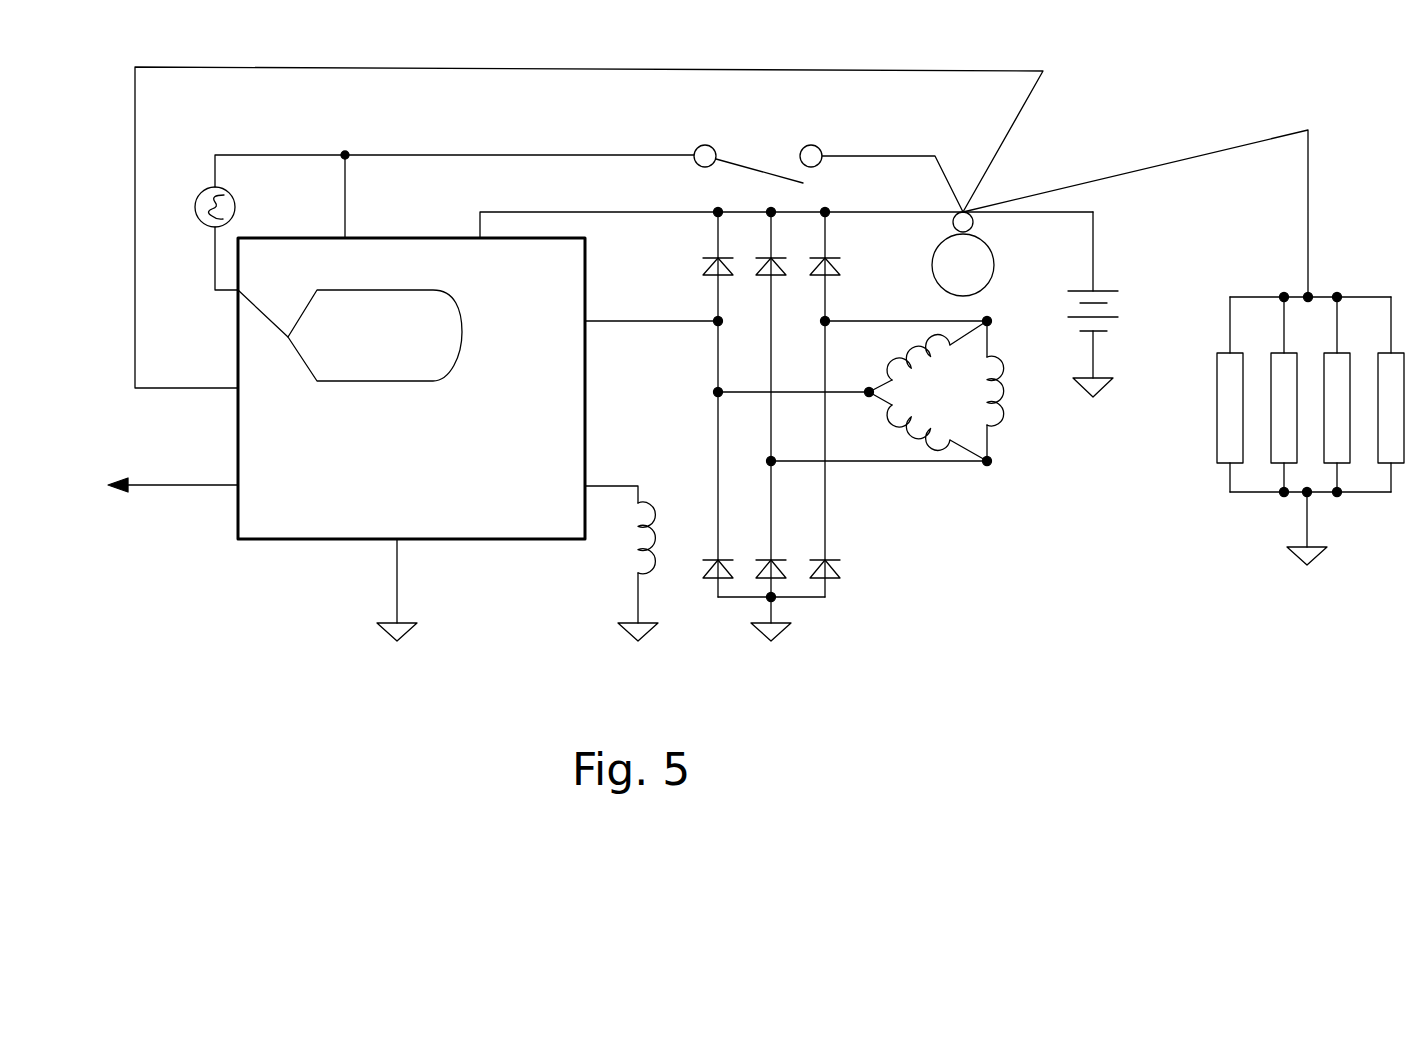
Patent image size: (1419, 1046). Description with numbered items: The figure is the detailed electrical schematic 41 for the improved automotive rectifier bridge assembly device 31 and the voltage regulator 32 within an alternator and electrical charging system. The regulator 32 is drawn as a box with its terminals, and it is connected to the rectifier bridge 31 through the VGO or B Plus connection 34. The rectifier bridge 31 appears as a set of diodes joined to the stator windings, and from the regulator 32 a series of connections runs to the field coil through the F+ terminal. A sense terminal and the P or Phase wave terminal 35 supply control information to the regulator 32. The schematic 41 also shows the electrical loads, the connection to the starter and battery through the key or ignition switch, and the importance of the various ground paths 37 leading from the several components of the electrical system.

The rectifier bridge device 31 is at (854, 528).
The voltage regulator 32 is at (286, 579).
The B+ semi ring terminal 34 is at (765, 223).
The P or Phase tracking terminal 35 is at (654, 310).
The ground system 37 is at (852, 502).
The electrical diagram or schematic 41 is at (959, 676).